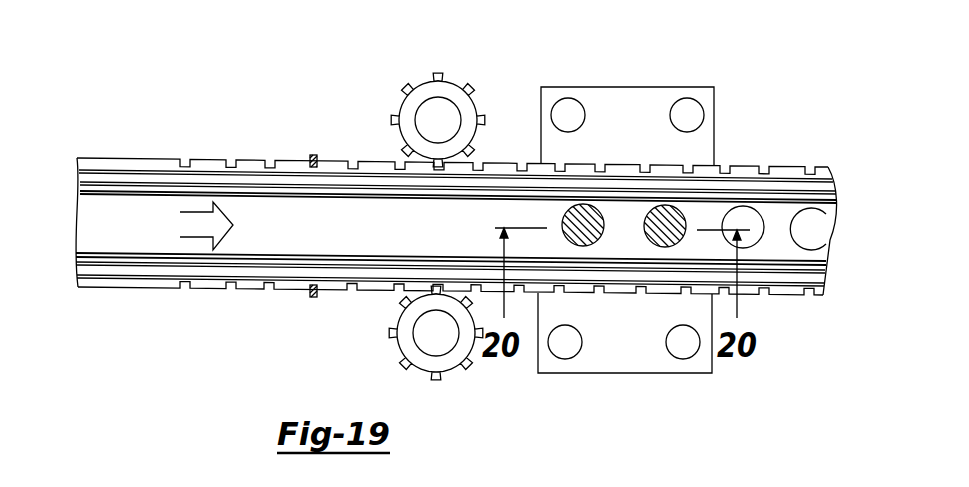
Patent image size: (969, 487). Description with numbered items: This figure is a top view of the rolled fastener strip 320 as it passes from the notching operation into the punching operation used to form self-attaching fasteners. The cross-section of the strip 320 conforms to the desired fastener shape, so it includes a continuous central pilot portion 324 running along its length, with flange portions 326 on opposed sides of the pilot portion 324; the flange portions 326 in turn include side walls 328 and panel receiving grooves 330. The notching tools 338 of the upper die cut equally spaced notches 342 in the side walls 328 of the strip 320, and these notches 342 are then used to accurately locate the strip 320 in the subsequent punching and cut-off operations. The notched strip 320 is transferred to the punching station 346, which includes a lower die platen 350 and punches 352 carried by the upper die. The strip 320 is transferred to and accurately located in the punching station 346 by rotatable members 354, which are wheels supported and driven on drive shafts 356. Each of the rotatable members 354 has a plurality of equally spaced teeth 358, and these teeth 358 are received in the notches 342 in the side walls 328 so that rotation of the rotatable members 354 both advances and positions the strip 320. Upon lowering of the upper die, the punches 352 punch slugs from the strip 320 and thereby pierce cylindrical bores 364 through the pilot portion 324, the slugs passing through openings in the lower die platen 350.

The strip 320 is at (146, 193).
The central pilot portion 324 is at (328, 230).
The flange portions 326 is at (118, 288).
The side walls 328 is at (162, 292).
The panel receiving grooves 330 is at (108, 256).
The notching tools 338 is at (317, 153).
The notches 342 is at (353, 293).
The punching station 346 is at (655, 77).
The lower die platen 350 is at (639, 374).
The punches 352 is at (562, 219).
The rotatable members 354 is at (447, 87).
The drive shafts 356 is at (427, 335).
The teeth 358 is at (485, 120).
The bores 364 is at (832, 237).